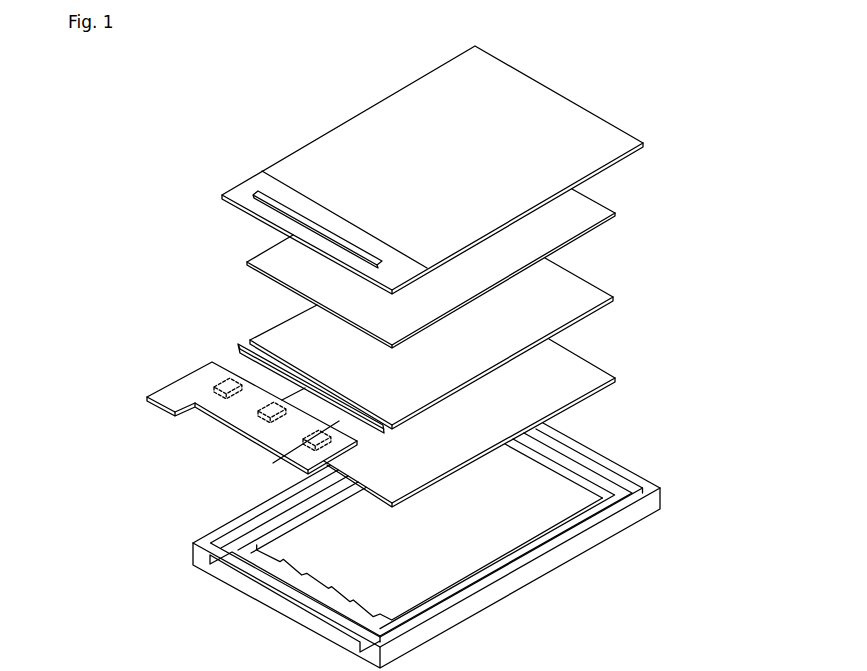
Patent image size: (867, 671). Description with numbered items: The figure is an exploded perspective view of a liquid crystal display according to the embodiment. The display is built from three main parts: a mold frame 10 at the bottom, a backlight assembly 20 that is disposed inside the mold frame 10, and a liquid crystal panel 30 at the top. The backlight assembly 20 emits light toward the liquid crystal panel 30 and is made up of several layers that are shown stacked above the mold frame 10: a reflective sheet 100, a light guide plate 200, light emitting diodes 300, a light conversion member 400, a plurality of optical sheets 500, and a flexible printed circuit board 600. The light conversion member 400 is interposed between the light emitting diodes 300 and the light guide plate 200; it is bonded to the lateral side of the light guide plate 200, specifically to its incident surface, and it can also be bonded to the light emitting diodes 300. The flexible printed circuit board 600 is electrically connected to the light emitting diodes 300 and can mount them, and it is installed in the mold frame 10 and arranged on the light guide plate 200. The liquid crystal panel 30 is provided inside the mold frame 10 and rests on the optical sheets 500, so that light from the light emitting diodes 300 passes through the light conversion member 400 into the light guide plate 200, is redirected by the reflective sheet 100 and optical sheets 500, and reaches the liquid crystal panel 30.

The mold frame 10 is at (208, 530).
The backlight assembly 20 is at (99, 307).
The liquid crystal panel 30 is at (288, 167).
The reflective sheet 100 is at (380, 483).
The light guide plate 200 is at (223, 389).
The light emitting diodes 300 is at (223, 390).
The light conversion member 400 is at (275, 344).
The optical sheets 500 is at (302, 278).
The flexible printed circuit board 600 is at (205, 369).